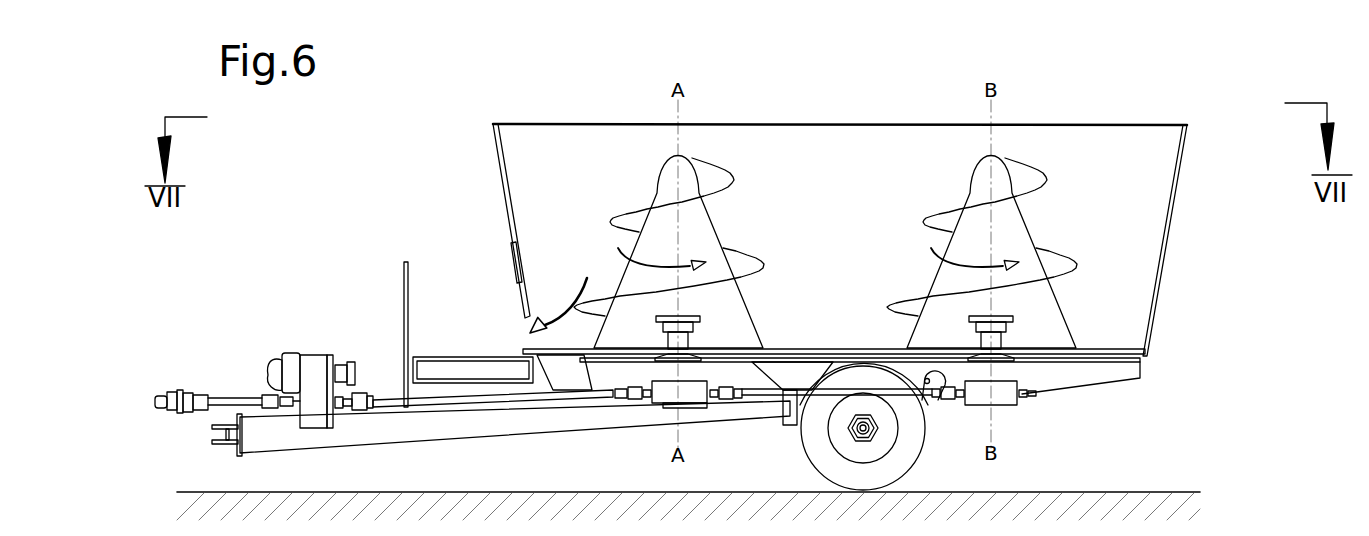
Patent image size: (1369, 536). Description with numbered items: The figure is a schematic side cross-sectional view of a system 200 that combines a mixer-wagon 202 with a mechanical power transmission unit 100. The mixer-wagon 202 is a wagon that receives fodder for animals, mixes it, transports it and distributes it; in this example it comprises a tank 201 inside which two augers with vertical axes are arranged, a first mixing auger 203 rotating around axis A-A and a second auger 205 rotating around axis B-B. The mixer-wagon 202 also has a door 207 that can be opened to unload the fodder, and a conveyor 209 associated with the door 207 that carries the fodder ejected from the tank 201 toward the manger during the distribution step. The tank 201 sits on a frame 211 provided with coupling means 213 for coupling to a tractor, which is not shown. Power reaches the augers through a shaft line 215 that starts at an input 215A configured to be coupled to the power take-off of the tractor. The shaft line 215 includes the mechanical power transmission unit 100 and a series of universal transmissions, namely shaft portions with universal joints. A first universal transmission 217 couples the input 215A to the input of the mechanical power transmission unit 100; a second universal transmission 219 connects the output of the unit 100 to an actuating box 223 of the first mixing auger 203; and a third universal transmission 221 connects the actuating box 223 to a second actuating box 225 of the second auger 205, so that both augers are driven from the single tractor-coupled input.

The mechanical power transmission unit 100 is at (303, 352).
The system 200 is at (442, 165).
The tank 201 is at (1177, 170).
The mixer-wagon 202 is at (843, 123).
The first mixing auger 203 is at (716, 226).
The second auger 205 is at (1029, 226).
The door 207 is at (513, 291).
The conveyor 209 is at (470, 357).
The frame 211 is at (253, 442).
The coupling means 213 is at (222, 447).
The shaft line 215 is at (388, 387).
The input 215A is at (191, 395).
The first universal transmission 217 is at (236, 400).
The second universal transmission 219 is at (437, 405).
The third universal transmission 221 is at (768, 395).
The actuating box 223 is at (665, 398).
The second actuating box 225 is at (1010, 405).